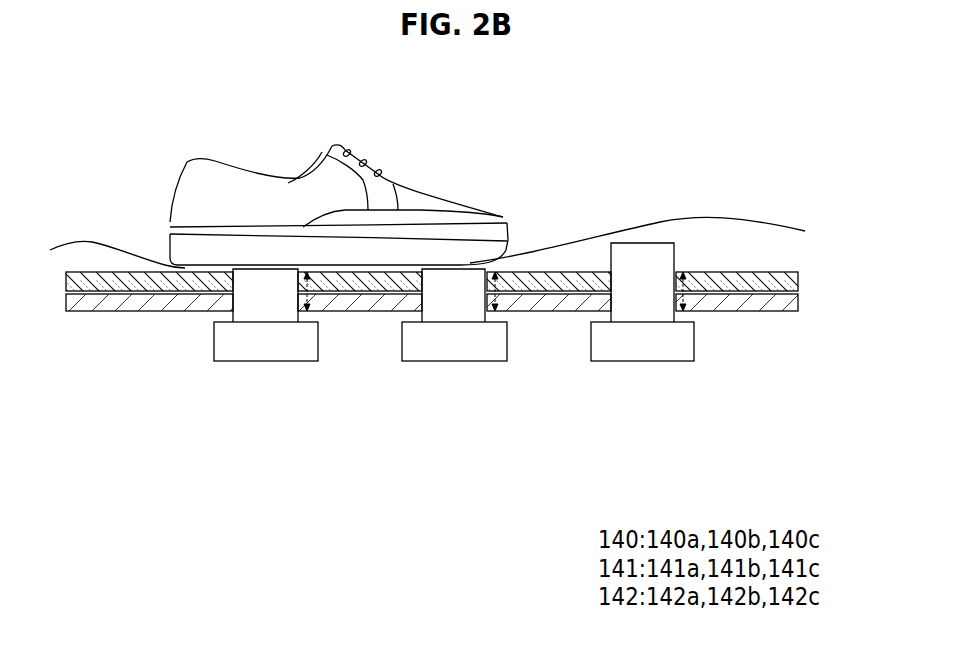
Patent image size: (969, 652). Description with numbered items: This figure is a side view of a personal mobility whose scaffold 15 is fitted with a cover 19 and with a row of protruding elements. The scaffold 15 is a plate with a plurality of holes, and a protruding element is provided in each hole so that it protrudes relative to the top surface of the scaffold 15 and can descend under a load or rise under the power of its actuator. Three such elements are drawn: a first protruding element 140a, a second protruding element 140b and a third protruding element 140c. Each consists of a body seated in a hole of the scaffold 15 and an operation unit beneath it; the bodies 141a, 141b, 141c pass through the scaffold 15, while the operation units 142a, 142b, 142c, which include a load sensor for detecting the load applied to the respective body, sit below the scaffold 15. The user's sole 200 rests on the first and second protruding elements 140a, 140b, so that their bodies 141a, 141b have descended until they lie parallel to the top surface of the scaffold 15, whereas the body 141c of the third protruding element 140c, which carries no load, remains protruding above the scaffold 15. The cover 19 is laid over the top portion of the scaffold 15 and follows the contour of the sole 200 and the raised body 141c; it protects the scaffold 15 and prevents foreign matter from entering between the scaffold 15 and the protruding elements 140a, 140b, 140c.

The user's sole 200 is at (357, 147).
The cover 19 is at (637, 222).
The scaffold 15 is at (803, 272).
The first protruding element 140a is at (239, 369).
The second protruding element 140b is at (427, 369).
The third protruding element 140c is at (615, 356).
The body of the first protruding element 141a is at (252, 305).
The body of the second protruding element 141b is at (441, 305).
The body of the third protruding element 141c is at (630, 305).
The operation unit 142a is at (238, 350).
The operation unit 142b is at (427, 350).
The operation unit 142c is at (616, 350).